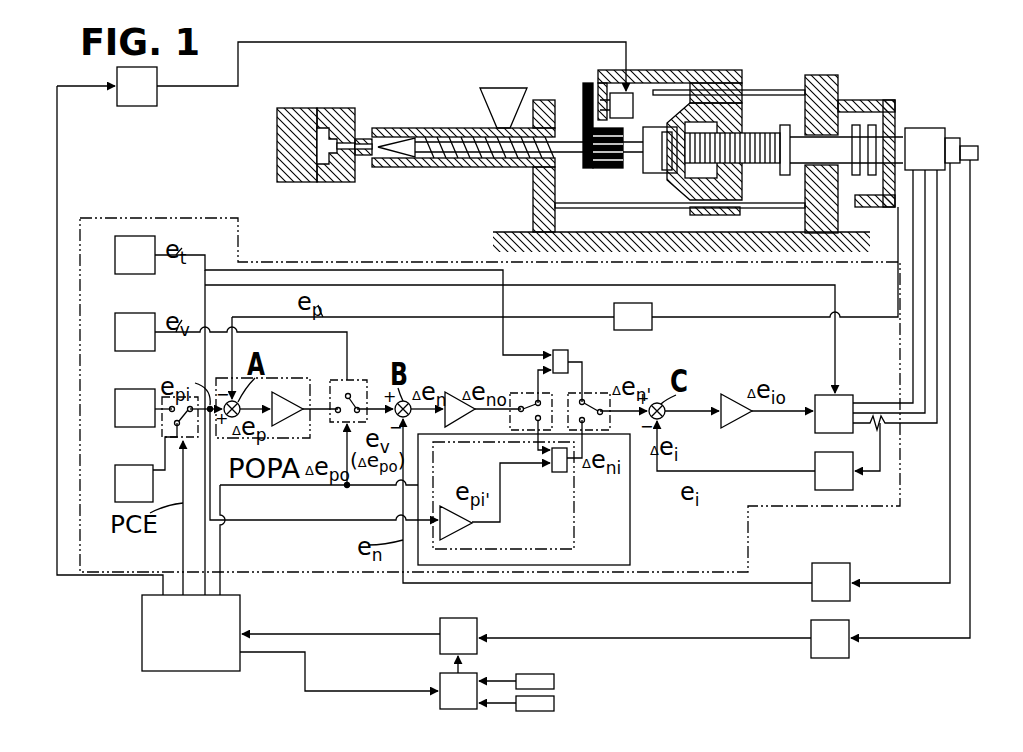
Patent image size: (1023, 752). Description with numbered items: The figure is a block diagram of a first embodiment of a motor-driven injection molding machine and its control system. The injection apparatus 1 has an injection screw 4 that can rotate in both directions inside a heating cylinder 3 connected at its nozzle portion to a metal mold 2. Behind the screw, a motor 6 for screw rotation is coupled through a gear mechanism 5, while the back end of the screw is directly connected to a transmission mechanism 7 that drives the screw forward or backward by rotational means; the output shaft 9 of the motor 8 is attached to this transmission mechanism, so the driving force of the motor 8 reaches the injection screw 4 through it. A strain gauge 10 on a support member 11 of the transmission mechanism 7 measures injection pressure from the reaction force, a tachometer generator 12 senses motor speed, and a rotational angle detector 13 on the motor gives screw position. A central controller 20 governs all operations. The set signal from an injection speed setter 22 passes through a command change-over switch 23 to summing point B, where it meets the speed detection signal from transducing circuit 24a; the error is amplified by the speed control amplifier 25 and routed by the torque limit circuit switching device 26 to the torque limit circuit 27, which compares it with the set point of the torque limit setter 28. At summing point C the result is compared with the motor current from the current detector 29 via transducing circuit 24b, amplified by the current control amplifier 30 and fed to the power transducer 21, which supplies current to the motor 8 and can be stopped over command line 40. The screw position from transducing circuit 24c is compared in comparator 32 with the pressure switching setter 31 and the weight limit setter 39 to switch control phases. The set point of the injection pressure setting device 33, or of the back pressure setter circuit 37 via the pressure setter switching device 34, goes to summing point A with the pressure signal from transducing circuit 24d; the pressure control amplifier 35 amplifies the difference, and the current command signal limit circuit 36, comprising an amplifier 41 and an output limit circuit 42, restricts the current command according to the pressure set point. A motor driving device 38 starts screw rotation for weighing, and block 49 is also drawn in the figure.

The injection apparatus 1 is at (398, 128).
The metal mold 2 is at (310, 108).
The heating cylinder 3 is at (403, 167).
The injection screw 4 is at (488, 167).
The gear mechanism 5 is at (605, 165).
The motor for screw rotation 6 is at (632, 98).
The transmission mechanism 7 is at (765, 133).
The motor 8 is at (933, 128).
The output shaft 9 is at (872, 125).
The strain gauge 10 is at (888, 200).
The support member 11 is at (805, 188).
The tachometer generator 12 is at (955, 138).
The rotational angle detector 13 is at (975, 148).
The central controller 20 is at (208, 650).
The power transducer 21 is at (858, 374).
The injection speed setter 22 is at (125, 333).
The command change-over switch 23 is at (358, 381).
The transducing circuit 24a is at (840, 580).
The transducing circuit 24b is at (820, 478).
The transducing circuit 24c is at (835, 650).
The transducing circuit 24d is at (652, 326).
The speed control amplifier 25 is at (450, 392).
The torque limit circuit switching device 26 is at (522, 393).
The torque limit circuit 27 is at (560, 351).
The torque limit setter 28 is at (125, 255).
The current detector 29 is at (885, 432).
The current control amplifier 30 is at (735, 420).
The pressure switching setter 31 is at (540, 708).
The comparator 32 is at (452, 628).
The injection pressure setting device 33 is at (125, 408).
The pressure setter switching device 34 is at (162, 430).
The pressure control amplifier 35 is at (300, 392).
The current command signal limit circuit 36 is at (574, 510).
The back pressure setter circuit 37 is at (120, 482).
The motor driving device 38 is at (143, 106).
The weight limit setter 39 is at (540, 682).
The command line 40 is at (728, 285).
The amplifier 41 is at (465, 530).
The output limit circuit 42 is at (558, 472).
The computing unit 49 is at (450, 685).